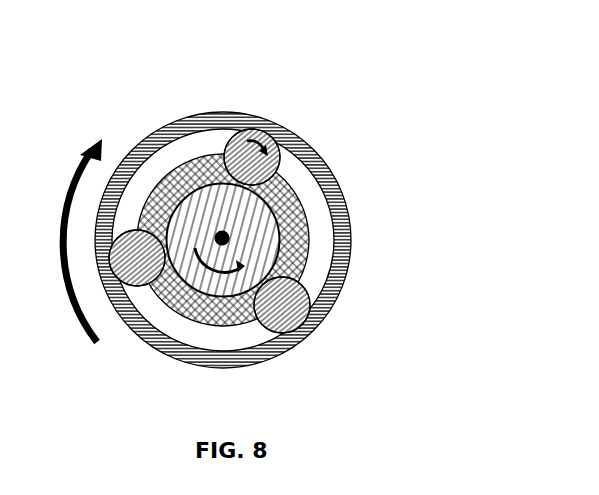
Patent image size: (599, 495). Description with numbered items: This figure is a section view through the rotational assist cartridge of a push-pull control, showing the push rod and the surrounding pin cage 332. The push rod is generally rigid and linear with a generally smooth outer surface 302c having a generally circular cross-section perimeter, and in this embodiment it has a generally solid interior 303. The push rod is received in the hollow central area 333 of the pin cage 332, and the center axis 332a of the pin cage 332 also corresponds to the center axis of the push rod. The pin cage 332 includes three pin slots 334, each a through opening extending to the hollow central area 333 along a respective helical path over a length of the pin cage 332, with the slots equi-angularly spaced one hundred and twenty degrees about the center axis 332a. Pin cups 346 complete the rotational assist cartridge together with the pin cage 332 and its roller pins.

The pin cups 346 is at (162, 348).
The hollow central area 333 is at (220, 178).
The pin cage 332 is at (330, 197).
The center axis 332a is at (232, 235).
The outer surface 302c is at (280, 232).
The pin slots 334 is at (177, 210).
The solid interior 303 is at (227, 285).